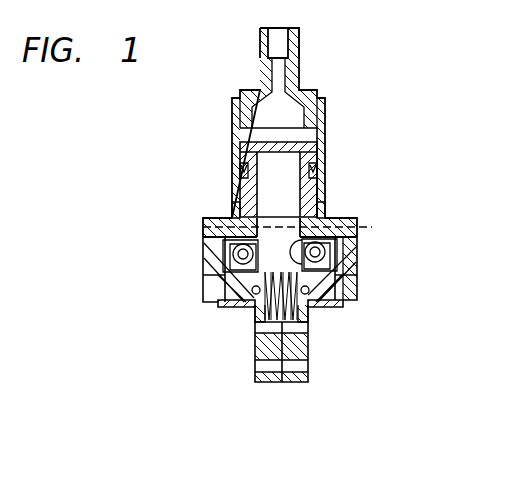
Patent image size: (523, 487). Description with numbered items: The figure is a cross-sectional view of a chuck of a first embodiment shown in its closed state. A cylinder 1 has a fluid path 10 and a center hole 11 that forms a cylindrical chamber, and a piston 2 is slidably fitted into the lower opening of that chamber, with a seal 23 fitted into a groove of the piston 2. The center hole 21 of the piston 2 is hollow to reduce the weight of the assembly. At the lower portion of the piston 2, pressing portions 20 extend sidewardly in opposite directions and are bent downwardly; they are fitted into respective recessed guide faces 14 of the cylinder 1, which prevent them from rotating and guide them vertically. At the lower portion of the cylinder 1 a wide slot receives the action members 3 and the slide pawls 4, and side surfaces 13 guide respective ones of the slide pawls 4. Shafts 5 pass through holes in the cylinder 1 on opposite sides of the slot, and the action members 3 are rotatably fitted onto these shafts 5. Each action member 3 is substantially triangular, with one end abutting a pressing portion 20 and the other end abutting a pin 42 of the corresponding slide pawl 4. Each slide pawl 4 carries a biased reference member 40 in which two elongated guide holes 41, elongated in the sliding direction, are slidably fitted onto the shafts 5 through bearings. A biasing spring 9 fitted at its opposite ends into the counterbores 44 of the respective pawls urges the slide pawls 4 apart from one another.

The cylinder 1 is at (317, 108).
The fluid path 10 is at (293, 67).
The center hole 11 is at (312, 140).
The seal 23 is at (313, 168).
The recessed guide faces 14 is at (232, 213).
The center hole of the piston 21 is at (325, 195).
The piston 2 is at (318, 212).
The reference member 40 is at (210, 218).
The pressing portions 20 is at (203, 241).
The action members 3 is at (210, 268).
The side surfaces 13 is at (353, 265).
The shafts 5 is at (357, 232).
The pin 42 is at (243, 305).
The elongated guide holes 41 is at (358, 293).
The biasing spring 9 is at (253, 310).
The counterbores 44 is at (310, 313).
The slide pawls 4 is at (258, 382).